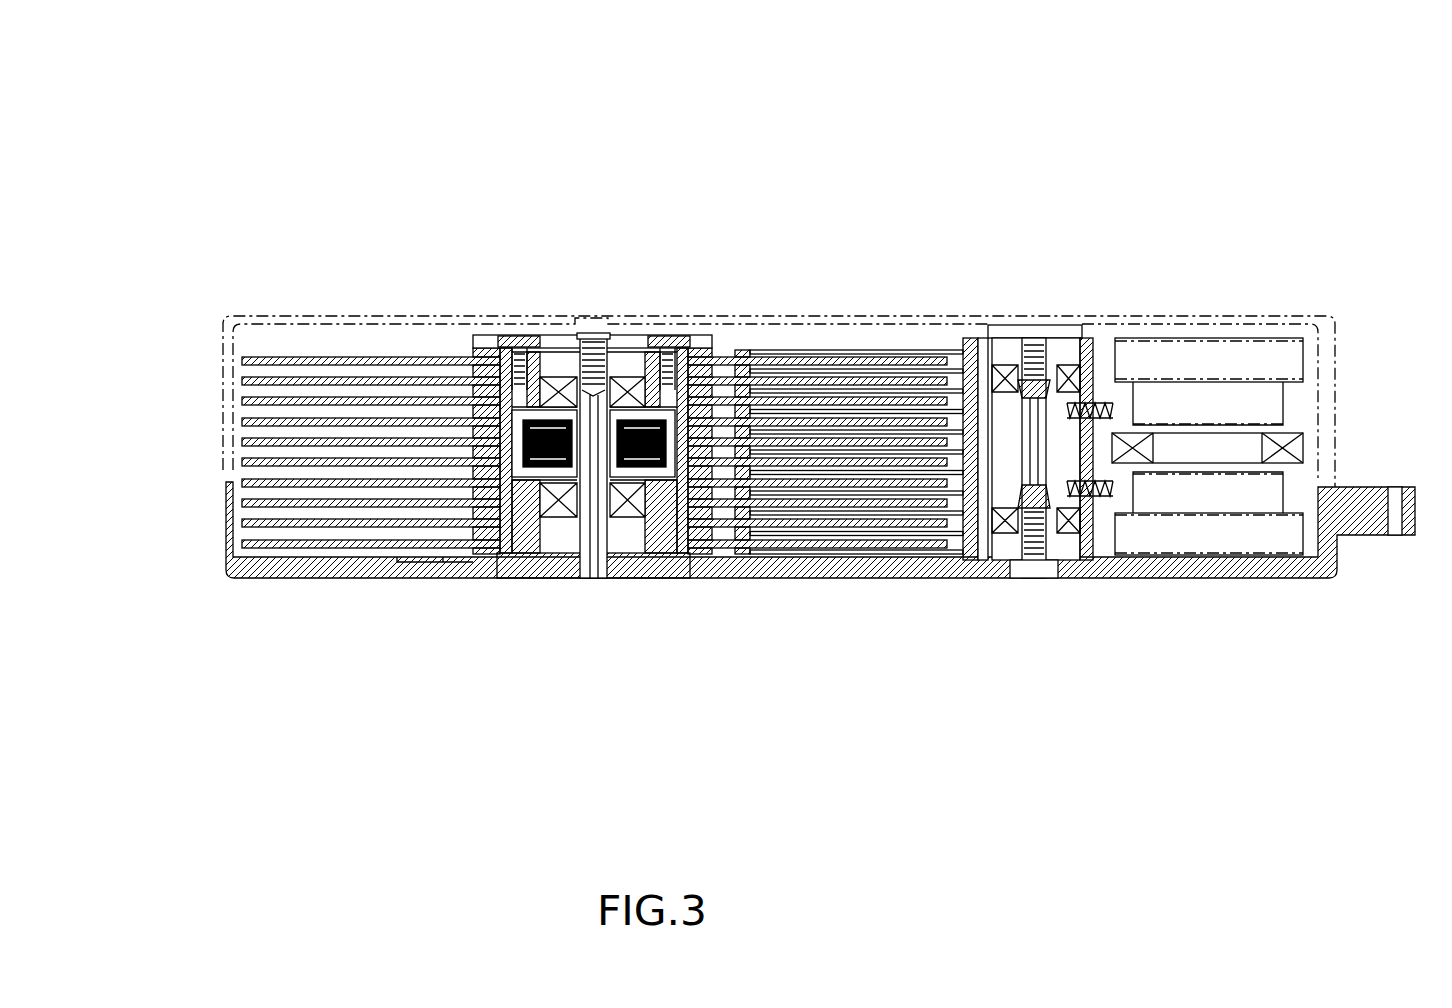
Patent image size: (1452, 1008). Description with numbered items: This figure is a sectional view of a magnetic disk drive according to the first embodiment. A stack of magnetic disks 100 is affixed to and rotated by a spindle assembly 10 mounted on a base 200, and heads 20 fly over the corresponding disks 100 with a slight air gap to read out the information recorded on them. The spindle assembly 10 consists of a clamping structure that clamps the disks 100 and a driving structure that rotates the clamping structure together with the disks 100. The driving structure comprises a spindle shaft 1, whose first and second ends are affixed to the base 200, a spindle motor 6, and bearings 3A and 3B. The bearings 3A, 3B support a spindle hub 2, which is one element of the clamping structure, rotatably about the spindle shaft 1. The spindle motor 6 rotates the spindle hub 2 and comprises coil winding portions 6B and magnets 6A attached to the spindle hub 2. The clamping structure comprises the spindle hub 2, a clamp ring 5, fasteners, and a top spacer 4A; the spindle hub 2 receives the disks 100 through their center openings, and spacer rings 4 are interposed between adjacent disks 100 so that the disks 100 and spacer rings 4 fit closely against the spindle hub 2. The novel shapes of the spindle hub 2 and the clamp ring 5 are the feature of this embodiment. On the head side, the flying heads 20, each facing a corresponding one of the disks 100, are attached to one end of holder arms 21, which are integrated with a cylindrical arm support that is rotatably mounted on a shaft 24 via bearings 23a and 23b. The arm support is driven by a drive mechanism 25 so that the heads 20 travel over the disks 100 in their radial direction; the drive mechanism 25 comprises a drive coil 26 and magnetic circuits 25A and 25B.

The spindle assembly 10 is at (713, 200).
The magnetic disk 100 is at (258, 540).
The clamp ring 5 is at (462, 350).
The bearing 3A is at (620, 382).
The top spacer 4A is at (737, 352).
The spacer ring 4 is at (714, 357).
The head 20 is at (750, 348).
The holder arm 21 is at (898, 352).
The bearing 23a is at (1057, 352).
The drive mechanism 25 is at (1266, 418).
The magnetic circuit 25A is at (1293, 358).
The drive coil 26 is at (1290, 437).
The base 200 is at (228, 557).
The magnet 6A is at (518, 553).
The bearing 3B is at (553, 518).
The coil winding portion 6B is at (713, 580).
The spindle motor 6 is at (690, 568).
The spindle shaft 1 is at (573, 436).
The spindle hub 2 is at (497, 555).
The shaft 24 is at (993, 579).
The bearing 23b is at (1093, 579).
The magnetic circuit 25B is at (1233, 540).